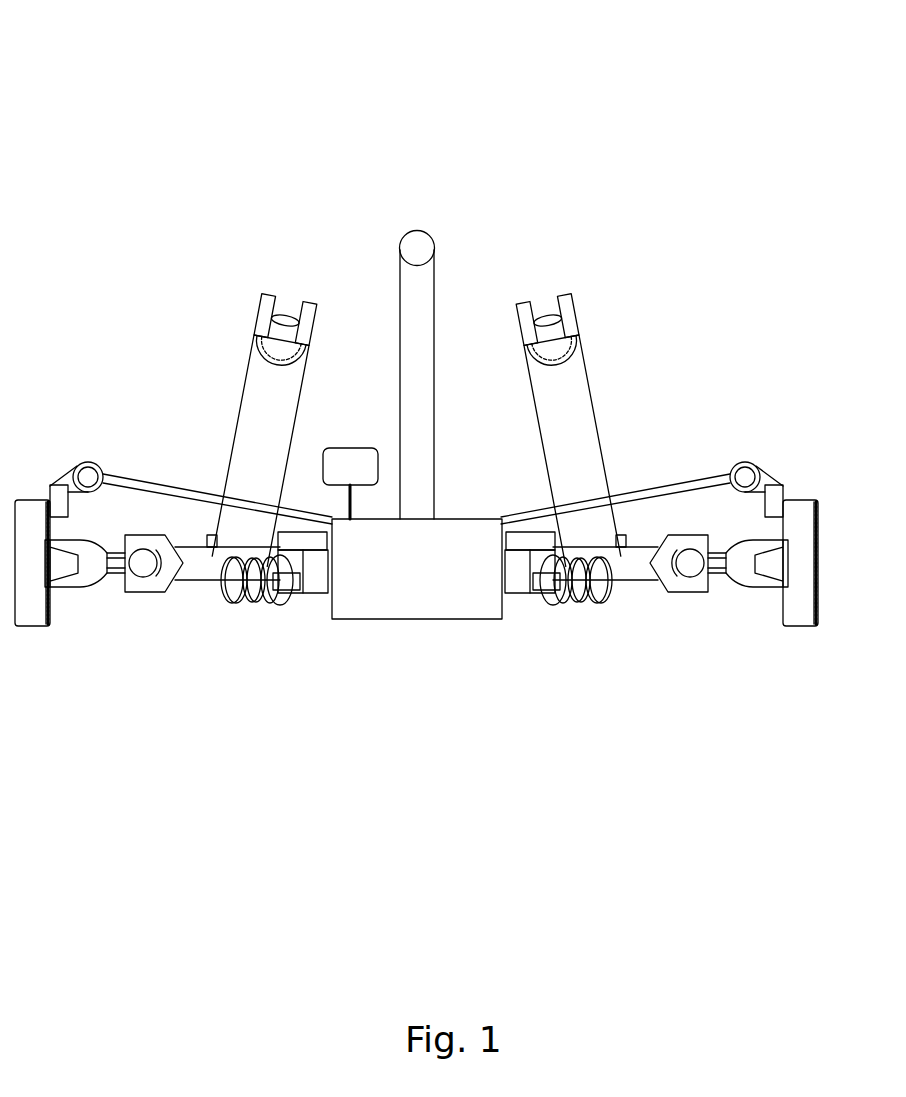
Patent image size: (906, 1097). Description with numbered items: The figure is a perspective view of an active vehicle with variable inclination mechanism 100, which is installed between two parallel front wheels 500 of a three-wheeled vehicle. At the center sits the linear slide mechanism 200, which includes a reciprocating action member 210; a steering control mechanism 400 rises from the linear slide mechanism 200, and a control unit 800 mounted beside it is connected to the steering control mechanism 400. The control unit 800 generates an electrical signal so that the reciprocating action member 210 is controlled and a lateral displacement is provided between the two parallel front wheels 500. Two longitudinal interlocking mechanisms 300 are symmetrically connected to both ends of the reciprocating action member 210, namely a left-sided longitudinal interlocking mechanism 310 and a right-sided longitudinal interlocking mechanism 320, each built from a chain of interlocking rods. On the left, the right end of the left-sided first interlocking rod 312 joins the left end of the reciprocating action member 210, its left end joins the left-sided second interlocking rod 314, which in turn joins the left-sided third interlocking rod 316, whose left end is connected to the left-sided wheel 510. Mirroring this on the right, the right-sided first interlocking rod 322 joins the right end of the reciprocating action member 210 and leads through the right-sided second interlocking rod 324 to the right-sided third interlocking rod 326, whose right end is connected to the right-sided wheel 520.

The active vehicle with variable inclination mechanism 100 is at (97, 38).
The linear slide mechanism 200 is at (443, 523).
The reciprocating action member 210 is at (315, 568).
The longitudinal interlocking mechanism 300 is at (677, 812).
The left-sided longitudinal interlocking mechanism 310 is at (247, 735).
The left-sided first interlocking rod 312 is at (253, 607).
The left-sided second interlocking rod 314 is at (192, 578).
The left-sided third interlocking rod 316 is at (88, 575).
The right-sided longitudinal interlocking mechanism 320 is at (760, 735).
The right-sided first interlocking rod 322 is at (580, 603).
The right-sided second interlocking rod 324 is at (647, 573).
The right-sided third interlocking rod 326 is at (747, 573).
The steering control mechanism 400 is at (430, 275).
The wheels 500 is at (345, 53).
The left-sided wheel 510 is at (32, 513).
The right-sided wheel 520 is at (802, 520).
The control unit 800 is at (350, 448).